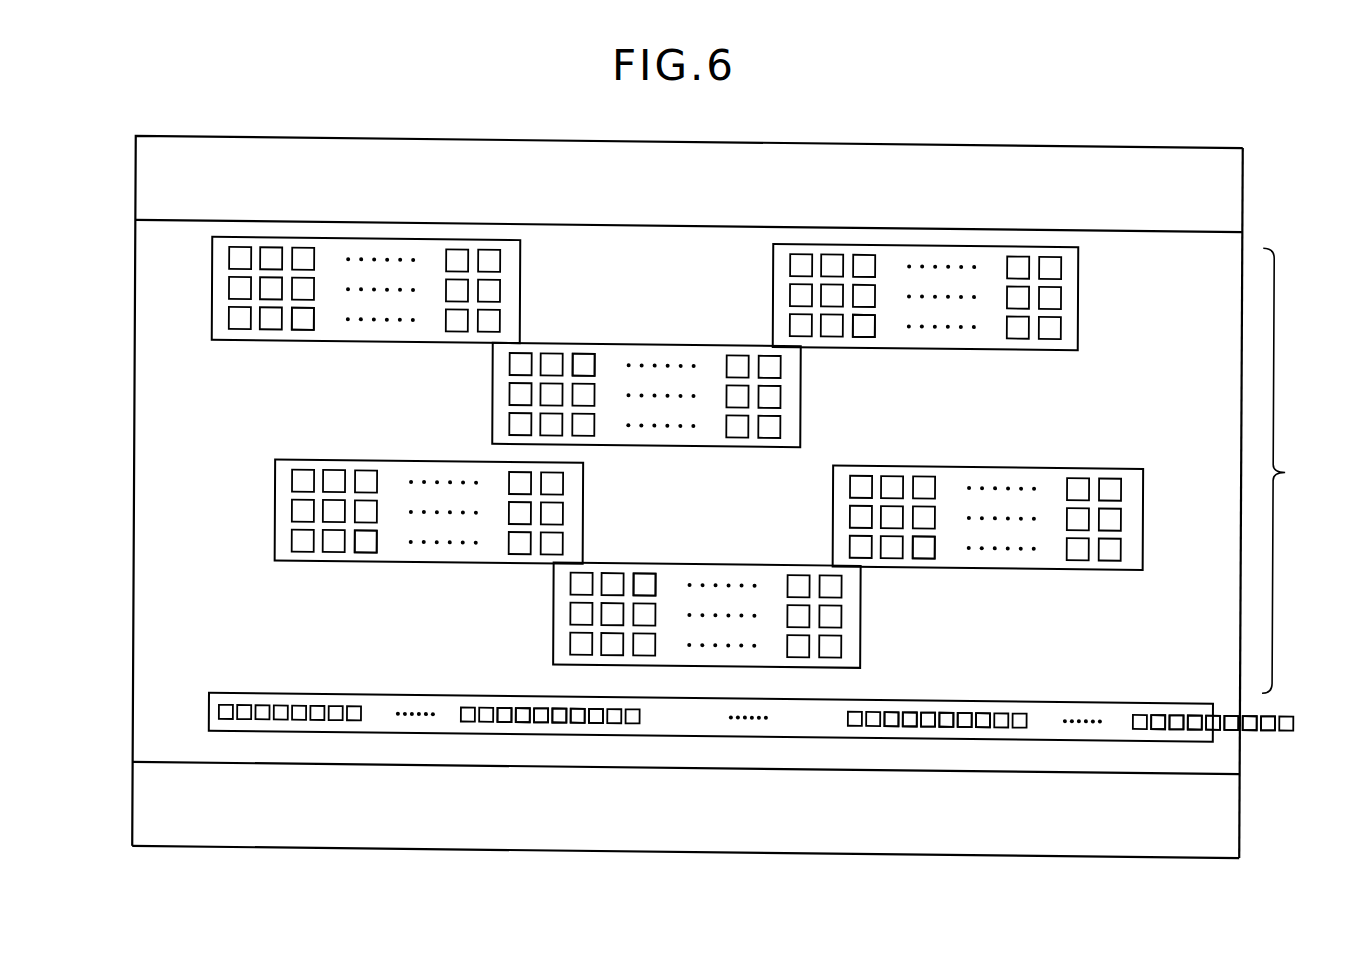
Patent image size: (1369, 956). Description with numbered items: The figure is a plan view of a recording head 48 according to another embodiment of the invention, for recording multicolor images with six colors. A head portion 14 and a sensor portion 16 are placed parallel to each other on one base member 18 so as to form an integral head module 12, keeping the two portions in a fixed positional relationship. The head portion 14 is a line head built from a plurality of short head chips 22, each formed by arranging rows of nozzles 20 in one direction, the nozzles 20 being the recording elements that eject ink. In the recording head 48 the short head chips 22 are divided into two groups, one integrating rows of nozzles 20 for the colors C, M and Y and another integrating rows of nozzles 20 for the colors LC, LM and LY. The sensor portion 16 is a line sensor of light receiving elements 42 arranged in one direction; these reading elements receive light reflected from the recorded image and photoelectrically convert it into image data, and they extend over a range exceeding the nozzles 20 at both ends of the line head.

The recording head 48 is at (1270, 189).
The head portion 14 is at (1290, 471).
The sensor portion 16 is at (1261, 742).
The head module 12 is at (994, 784).
The base member 18 is at (794, 769).
The nozzle 20 is at (299, 334).
The short head chip 22 is at (252, 345).
The light receiving element 42 is at (321, 724).